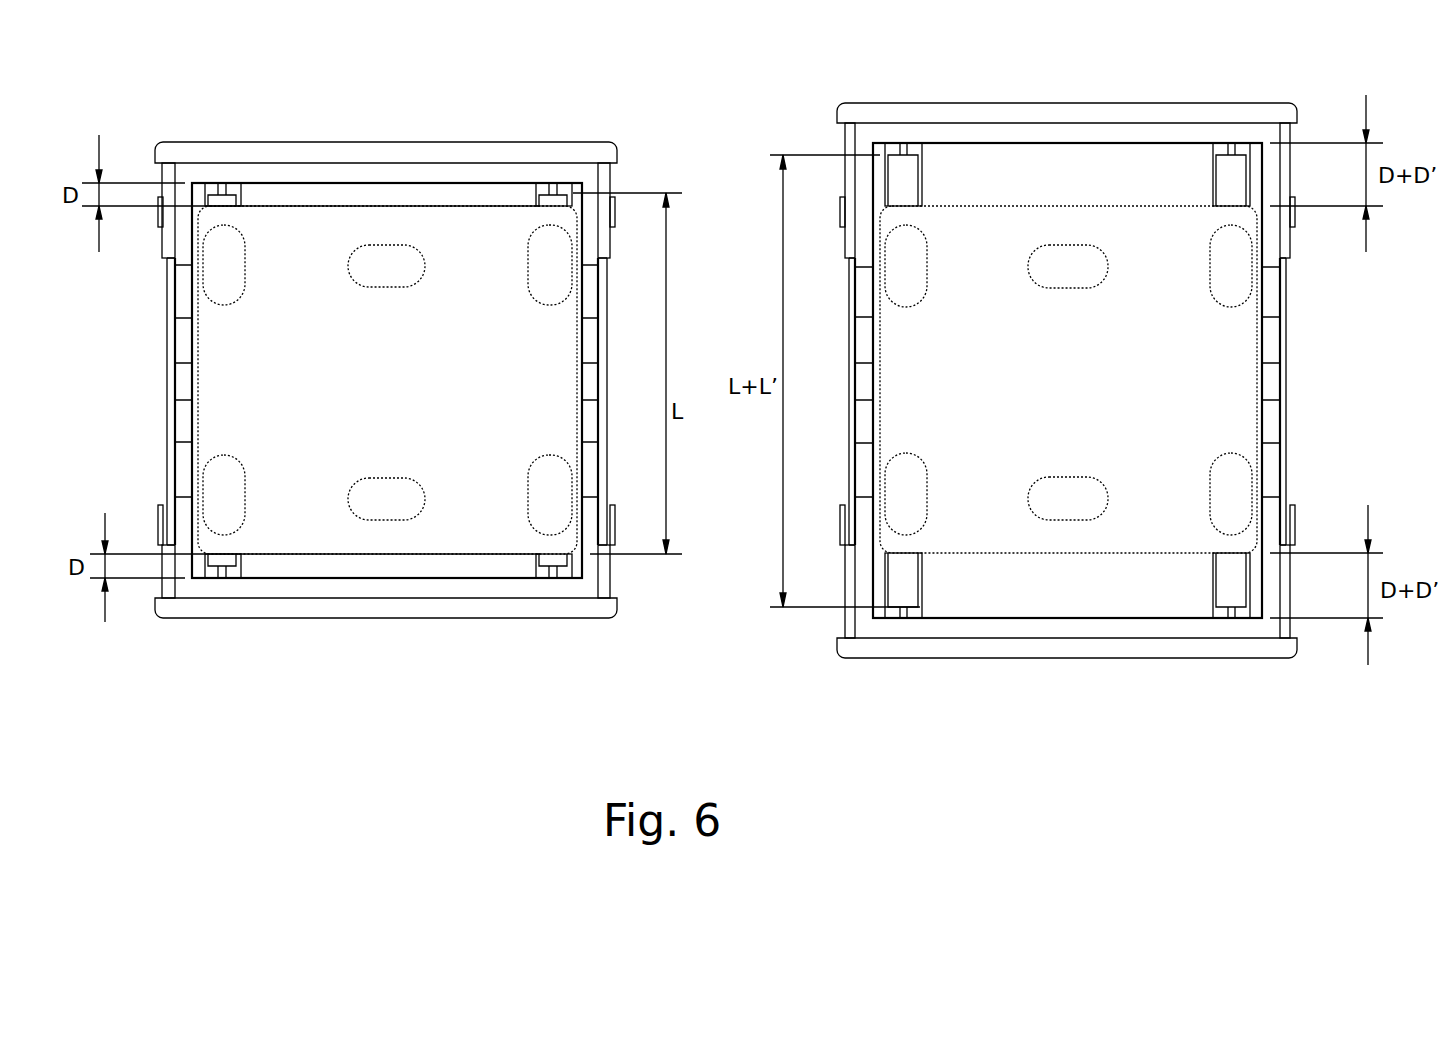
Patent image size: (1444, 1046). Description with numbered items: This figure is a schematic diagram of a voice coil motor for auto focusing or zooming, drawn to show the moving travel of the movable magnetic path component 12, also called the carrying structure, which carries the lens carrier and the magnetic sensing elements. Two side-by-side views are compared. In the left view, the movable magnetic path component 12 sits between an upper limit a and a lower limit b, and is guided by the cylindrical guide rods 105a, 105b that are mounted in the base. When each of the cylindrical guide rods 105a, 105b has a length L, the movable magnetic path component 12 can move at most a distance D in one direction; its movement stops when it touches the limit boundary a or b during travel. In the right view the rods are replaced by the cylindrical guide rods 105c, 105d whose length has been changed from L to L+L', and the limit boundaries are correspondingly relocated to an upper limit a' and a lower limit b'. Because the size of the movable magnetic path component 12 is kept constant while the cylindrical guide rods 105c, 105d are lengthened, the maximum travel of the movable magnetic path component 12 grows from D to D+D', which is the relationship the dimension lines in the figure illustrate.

The movable magnetic path component 12 is at (283, 318).
The cylindrical guide rod 105a is at (225, 560).
The cylindrical guide rod 105b is at (548, 565).
The cylindrical guide rod 105c is at (898, 575).
The cylindrical guide rod 105d is at (1225, 587).
The upper rail a is at (386, 141).
The lower rail b is at (386, 634).
The upper rail (extended) a' is at (1067, 100).
The lower rail (extended) b' is at (1067, 671).